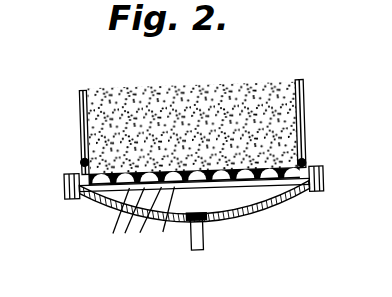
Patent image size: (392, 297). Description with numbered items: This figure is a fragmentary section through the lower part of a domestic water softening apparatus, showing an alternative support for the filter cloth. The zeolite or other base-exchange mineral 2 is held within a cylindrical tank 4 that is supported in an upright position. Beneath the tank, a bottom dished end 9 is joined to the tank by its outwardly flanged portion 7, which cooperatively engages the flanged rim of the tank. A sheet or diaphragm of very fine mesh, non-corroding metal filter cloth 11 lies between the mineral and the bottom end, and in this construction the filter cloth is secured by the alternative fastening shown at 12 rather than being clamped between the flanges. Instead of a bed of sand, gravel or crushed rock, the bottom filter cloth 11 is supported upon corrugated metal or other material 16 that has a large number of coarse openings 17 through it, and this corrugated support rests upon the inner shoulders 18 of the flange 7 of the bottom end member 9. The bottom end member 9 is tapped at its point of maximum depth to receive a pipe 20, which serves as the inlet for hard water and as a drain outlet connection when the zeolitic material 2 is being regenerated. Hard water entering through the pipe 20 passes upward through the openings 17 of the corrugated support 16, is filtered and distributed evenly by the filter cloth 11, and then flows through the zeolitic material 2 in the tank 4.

The zeolite 2 is at (257, 103).
The tank 4 is at (82, 112).
The filter cloth 11 is at (283, 168).
The securing means for filter cloth 12 is at (80, 157).
The inner shoulders 18 is at (90, 193).
The outwardly flanged portion 7 is at (63, 193).
The bottom dished end 9 is at (268, 205).
The pipe 20 is at (200, 238).
The coarse openings 17 is at (130, 222).
The corrugated metal 16 is at (160, 231).